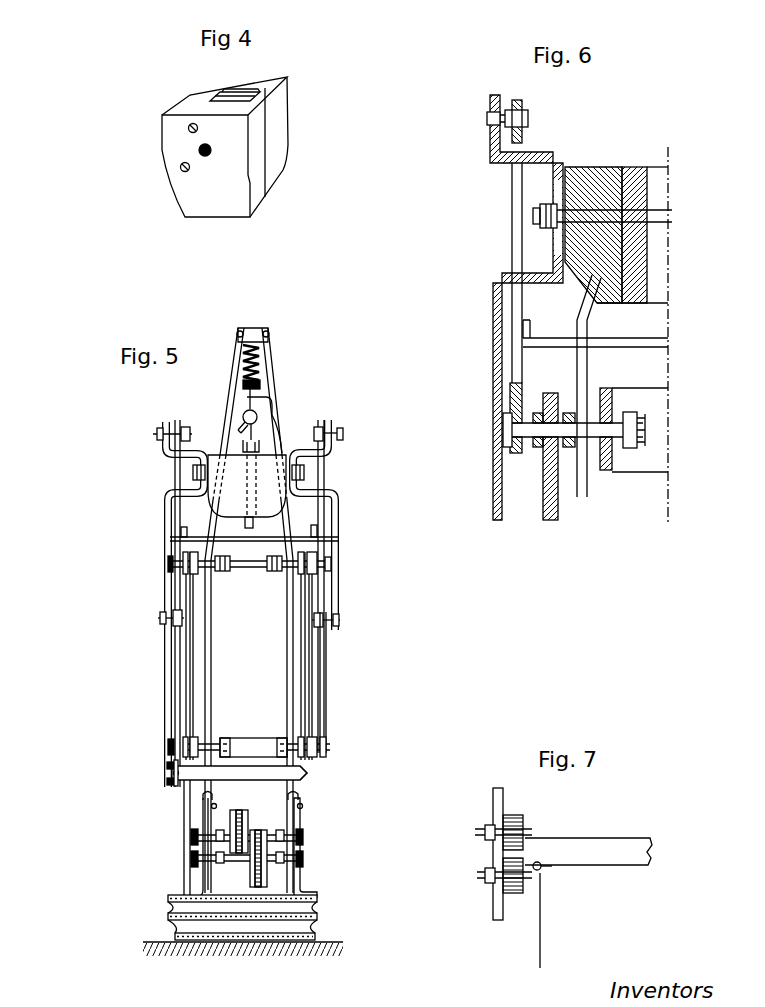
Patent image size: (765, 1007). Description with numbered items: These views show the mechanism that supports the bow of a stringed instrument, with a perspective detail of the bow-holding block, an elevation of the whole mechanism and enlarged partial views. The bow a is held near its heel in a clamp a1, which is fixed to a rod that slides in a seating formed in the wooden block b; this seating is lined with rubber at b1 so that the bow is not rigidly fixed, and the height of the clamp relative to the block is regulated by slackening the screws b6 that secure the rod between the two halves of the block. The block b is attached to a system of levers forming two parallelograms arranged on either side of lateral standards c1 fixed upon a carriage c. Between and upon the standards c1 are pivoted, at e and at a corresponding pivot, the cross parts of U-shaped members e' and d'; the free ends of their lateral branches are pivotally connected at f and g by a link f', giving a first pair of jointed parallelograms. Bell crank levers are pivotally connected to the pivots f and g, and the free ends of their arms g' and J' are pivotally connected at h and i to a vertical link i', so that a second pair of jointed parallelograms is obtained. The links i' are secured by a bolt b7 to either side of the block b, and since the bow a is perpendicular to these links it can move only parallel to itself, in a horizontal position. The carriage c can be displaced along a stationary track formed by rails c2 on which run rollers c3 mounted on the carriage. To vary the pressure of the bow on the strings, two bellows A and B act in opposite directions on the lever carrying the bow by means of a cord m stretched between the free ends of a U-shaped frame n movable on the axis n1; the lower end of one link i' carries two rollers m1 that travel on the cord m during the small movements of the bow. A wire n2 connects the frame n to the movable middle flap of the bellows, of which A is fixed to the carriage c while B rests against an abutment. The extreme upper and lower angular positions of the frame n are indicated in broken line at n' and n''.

In FIG. 4, the wooden block b is at (208, 198).
In FIG. 6, the wooden block b is at (600, 263).
In FIG. 5, the wooden block b is at (247, 491).
In FIG. 4, the rubber lining b1 is at (233, 91).
In FIG. 6, the rubber lining b1 is at (647, 237).
In FIG. 4, the screws b6 is at (182, 163).
In FIG. 4, the bolt b7 is at (211, 150).
In FIG. 6, the bolt b7 is at (540, 218).
In FIG. 5, the bolt b7 is at (193, 473).
In FIG. 6, the pivot i is at (485, 118).
In FIG. 5, the pivot i is at (247, 433).
In FIG. 6, the vertical link i' is at (507, 307).
In FIG. 5, the vertical link i' is at (252, 603).
In FIG. 6, the arm of bell crank lever J' is at (525, 276).
In FIG. 5, the arm of bell crank lever J' is at (242, 603).
In FIG. 6, the pivot f is at (573, 404).
In FIG. 5, the pivot f is at (240, 583).
In FIG. 6, the link f' is at (544, 456).
In FIG. 5, the link f' is at (250, 656).
In FIG. 6, the lateral standards c1 is at (595, 336).
In FIG. 5, the lateral standards c1 is at (212, 662).
In FIG. 6, the U-shaped member d' is at (634, 456).
In FIG. 5, the U-shaped member d' is at (248, 582).
In FIG. 5, the bow a is at (243, 415).
In FIG. 5, the clamp a1 is at (257, 436).
In FIG. 5, the pivot h is at (160, 622).
In FIG. 5, the pivot g is at (259, 714).
In FIG. 5, the arm of bell crank lever g' is at (346, 682).
In FIG. 7, the U-shaped frame n is at (588, 839).
In FIG. 5, the U-shaped frame n is at (239, 746).
In FIG. 5, the extreme upper angular position of the U-shaped frame n' is at (187, 700).
In FIG. 5, the extreme lower angular position of the U-shaped frame n'' is at (139, 794).
In FIG. 5, the axis n1 is at (308, 773).
In FIG. 7, the wire n2 is at (540, 951).
In FIG. 5, the wire n2 is at (185, 826).
In FIG. 7, the pivot e is at (542, 868).
In FIG. 5, the U-shaped member e' is at (253, 723).
In FIG. 7, the cord m is at (502, 855).
In FIG. 5, the cord m is at (170, 778).
In FIG. 7, the rollers m1 is at (515, 813).
In FIG. 5, the rollers m1 is at (167, 766).
In FIG. 5, the carriage c is at (202, 873).
In FIG. 5, the rails c2 is at (214, 800).
In FIG. 5, the rollers c3 is at (300, 840).
In FIG. 5, the bellows A is at (280, 910).
In FIG. 5, the bellows B is at (213, 933).